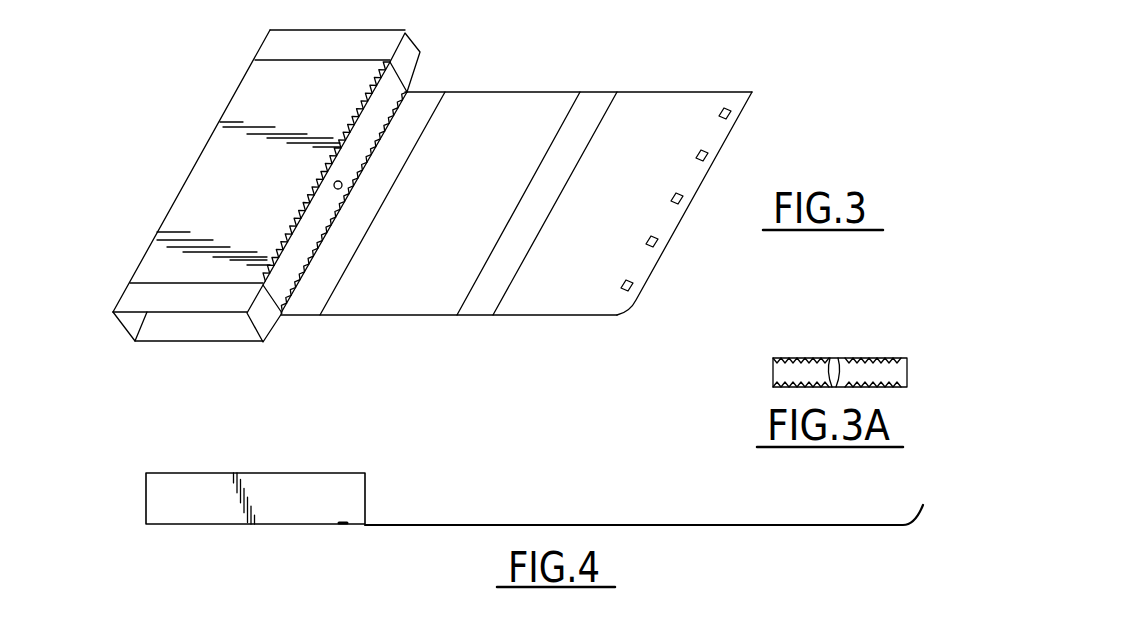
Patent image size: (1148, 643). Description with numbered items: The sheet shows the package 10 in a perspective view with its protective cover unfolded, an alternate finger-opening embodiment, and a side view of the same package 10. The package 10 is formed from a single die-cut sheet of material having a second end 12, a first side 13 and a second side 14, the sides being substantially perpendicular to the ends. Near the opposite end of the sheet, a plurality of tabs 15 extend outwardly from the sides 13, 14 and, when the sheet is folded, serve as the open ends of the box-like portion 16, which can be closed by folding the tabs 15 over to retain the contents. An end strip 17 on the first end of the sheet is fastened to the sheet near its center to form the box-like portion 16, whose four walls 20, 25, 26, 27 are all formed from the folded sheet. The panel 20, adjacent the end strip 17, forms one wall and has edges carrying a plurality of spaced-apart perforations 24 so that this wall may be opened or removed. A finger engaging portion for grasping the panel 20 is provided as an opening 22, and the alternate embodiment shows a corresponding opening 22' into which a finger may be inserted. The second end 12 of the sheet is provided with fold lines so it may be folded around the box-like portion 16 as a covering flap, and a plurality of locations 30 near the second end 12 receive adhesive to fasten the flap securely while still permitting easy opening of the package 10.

In FIG. 3, the package 10 is at (592, 48).
In FIG. 4, the package 10 is at (440, 545).
In FIG. 3, the second end 12 is at (680, 224).
In FIG. 4, the second end 12 is at (657, 505).
In FIG. 3, the first side 13 is at (507, 92).
In FIG. 3, the second side 14 is at (363, 315).
In FIG. 3, the tabs 15 is at (421, 53).
In FIG. 3, the box-like portion 16 is at (142, 220).
In FIG. 4, the box-like portion 16 is at (257, 552).
In FIG. 4, the end strip 17 is at (351, 528).
In FIG. 3, the panel 20 is at (286, 290).
In FIG. 4, the panel 20 is at (366, 502).
In FIG. 3, the opening 22 is at (353, 187).
In FIG. 3A, the opening 22' is at (851, 392).
In FIG. 3, the perforations 24 is at (363, 107).
In FIG. 3A, the perforations 24 is at (868, 373).
In FIG. 3, the wall 25 is at (208, 162).
In FIG. 4, the wall 25 is at (222, 473).
In FIG. 4, the wall 26 is at (145, 497).
In FIG. 4, the wall 27 is at (257, 527).
In FIG. 3, the locations 30 is at (678, 210).